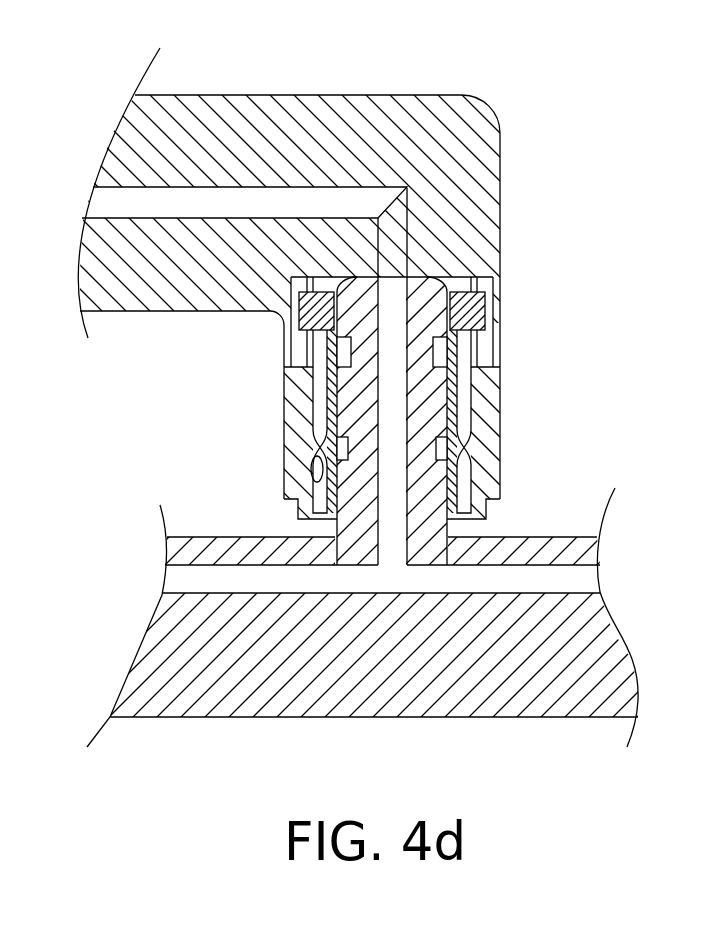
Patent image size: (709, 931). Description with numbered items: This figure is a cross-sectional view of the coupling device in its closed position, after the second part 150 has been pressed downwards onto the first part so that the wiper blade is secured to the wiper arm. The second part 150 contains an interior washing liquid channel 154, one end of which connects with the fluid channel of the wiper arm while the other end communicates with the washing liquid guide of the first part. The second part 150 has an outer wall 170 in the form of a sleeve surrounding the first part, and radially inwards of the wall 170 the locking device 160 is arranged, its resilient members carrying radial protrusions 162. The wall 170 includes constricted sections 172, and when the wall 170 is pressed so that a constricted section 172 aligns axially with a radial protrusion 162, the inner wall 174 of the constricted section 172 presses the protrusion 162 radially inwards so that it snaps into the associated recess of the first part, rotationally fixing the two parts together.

The second part 150 is at (556, 262).
The washing liquid channel 154 is at (268, 205).
The locking device 160 is at (448, 391).
The radial protrusion 162 is at (462, 447).
The outer wall 170 is at (282, 465).
The constricted section 172 is at (292, 442).
The inner wall 174 is at (320, 470).